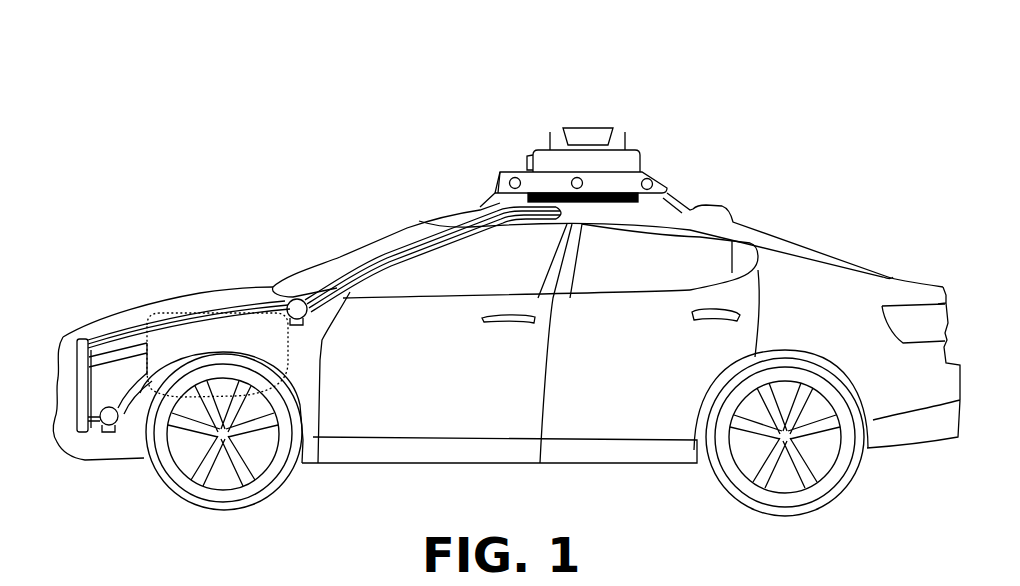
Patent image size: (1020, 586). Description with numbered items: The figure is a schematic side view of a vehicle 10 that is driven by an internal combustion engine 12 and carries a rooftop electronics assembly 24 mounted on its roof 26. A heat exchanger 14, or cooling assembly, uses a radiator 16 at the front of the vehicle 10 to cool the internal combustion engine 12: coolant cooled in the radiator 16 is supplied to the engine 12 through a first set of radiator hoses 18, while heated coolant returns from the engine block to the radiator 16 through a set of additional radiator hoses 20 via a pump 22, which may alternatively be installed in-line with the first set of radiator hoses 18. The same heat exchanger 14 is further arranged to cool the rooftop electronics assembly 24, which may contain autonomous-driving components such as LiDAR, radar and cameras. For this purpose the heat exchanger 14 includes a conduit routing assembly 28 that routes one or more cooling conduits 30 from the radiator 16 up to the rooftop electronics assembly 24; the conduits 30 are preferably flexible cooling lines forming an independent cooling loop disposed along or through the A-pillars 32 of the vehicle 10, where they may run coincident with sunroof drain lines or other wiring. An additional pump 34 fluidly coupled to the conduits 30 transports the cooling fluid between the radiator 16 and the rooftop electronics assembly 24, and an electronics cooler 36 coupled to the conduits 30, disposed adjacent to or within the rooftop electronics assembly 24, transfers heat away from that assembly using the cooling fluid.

The vehicle 10 is at (278, 129).
The internal combustion engine 12 is at (222, 312).
The heat exchanger 14 is at (155, 278).
The radiator 16 is at (90, 313).
The first set of radiator hoses 18 is at (127, 343).
The set of additional radiator hoses 20 is at (100, 430).
The pump 22 is at (124, 402).
The rooftop electronics assembly 24 is at (537, 145).
The roof 26 is at (470, 210).
The conduit routing assembly 28 is at (368, 262).
The cooling conduits 30 is at (350, 280).
The A-pillars 32 is at (413, 246).
The additional pump 34 is at (313, 333).
The electronics cooler 36 is at (603, 207).